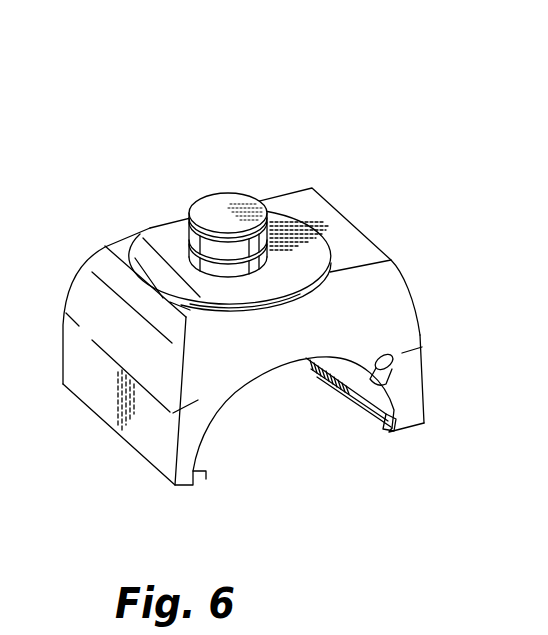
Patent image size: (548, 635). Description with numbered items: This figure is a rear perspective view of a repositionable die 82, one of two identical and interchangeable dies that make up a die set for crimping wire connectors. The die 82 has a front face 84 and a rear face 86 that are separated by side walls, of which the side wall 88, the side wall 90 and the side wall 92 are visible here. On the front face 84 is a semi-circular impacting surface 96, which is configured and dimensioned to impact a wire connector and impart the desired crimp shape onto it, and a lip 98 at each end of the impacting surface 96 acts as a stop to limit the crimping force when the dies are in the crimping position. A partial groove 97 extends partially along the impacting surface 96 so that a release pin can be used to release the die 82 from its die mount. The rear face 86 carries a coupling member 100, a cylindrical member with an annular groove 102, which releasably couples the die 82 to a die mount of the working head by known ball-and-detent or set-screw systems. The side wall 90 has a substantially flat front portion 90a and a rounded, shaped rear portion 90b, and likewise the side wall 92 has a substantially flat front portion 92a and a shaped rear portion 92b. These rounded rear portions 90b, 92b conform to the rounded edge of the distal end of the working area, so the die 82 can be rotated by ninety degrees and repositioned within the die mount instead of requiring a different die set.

The die 82 is at (117, 143).
The front face 84 is at (278, 438).
The rear face 86 is at (265, 181).
The side wall 88 is at (352, 222).
The side wall 90 is at (60, 325).
The flat front portion 90a is at (78, 378).
The shaped rear portion 90b is at (82, 275).
The side wall 92 is at (407, 376).
The flat front portion 92a is at (411, 416).
The shaped rear portion 92b is at (389, 277).
The impacting surface 96 is at (287, 360).
The partial groove 97 is at (391, 357).
The lip 98 is at (188, 487).
The coupling member 100 is at (222, 204).
The annular groove 102 is at (183, 242).